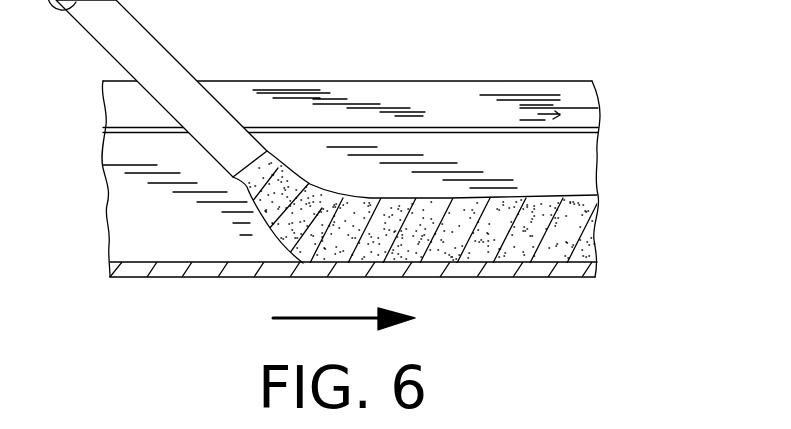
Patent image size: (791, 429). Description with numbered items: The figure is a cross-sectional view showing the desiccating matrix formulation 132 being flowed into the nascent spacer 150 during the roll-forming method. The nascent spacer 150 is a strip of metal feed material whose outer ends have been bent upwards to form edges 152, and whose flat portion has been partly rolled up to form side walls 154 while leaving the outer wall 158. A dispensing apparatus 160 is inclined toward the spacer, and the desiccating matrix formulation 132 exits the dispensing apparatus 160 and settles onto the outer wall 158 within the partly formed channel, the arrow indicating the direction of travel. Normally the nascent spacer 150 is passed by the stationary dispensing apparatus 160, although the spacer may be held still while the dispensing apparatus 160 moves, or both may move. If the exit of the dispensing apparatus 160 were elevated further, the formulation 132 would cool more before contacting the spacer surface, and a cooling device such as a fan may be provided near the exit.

The desiccating matrix formulation 132 is at (560, 240).
The nascent spacer 150 is at (390, 175).
The edges 152 is at (557, 112).
The side walls 154 is at (540, 172).
The outer wall 158 is at (506, 277).
The dispensing apparatus 160 is at (145, 47).